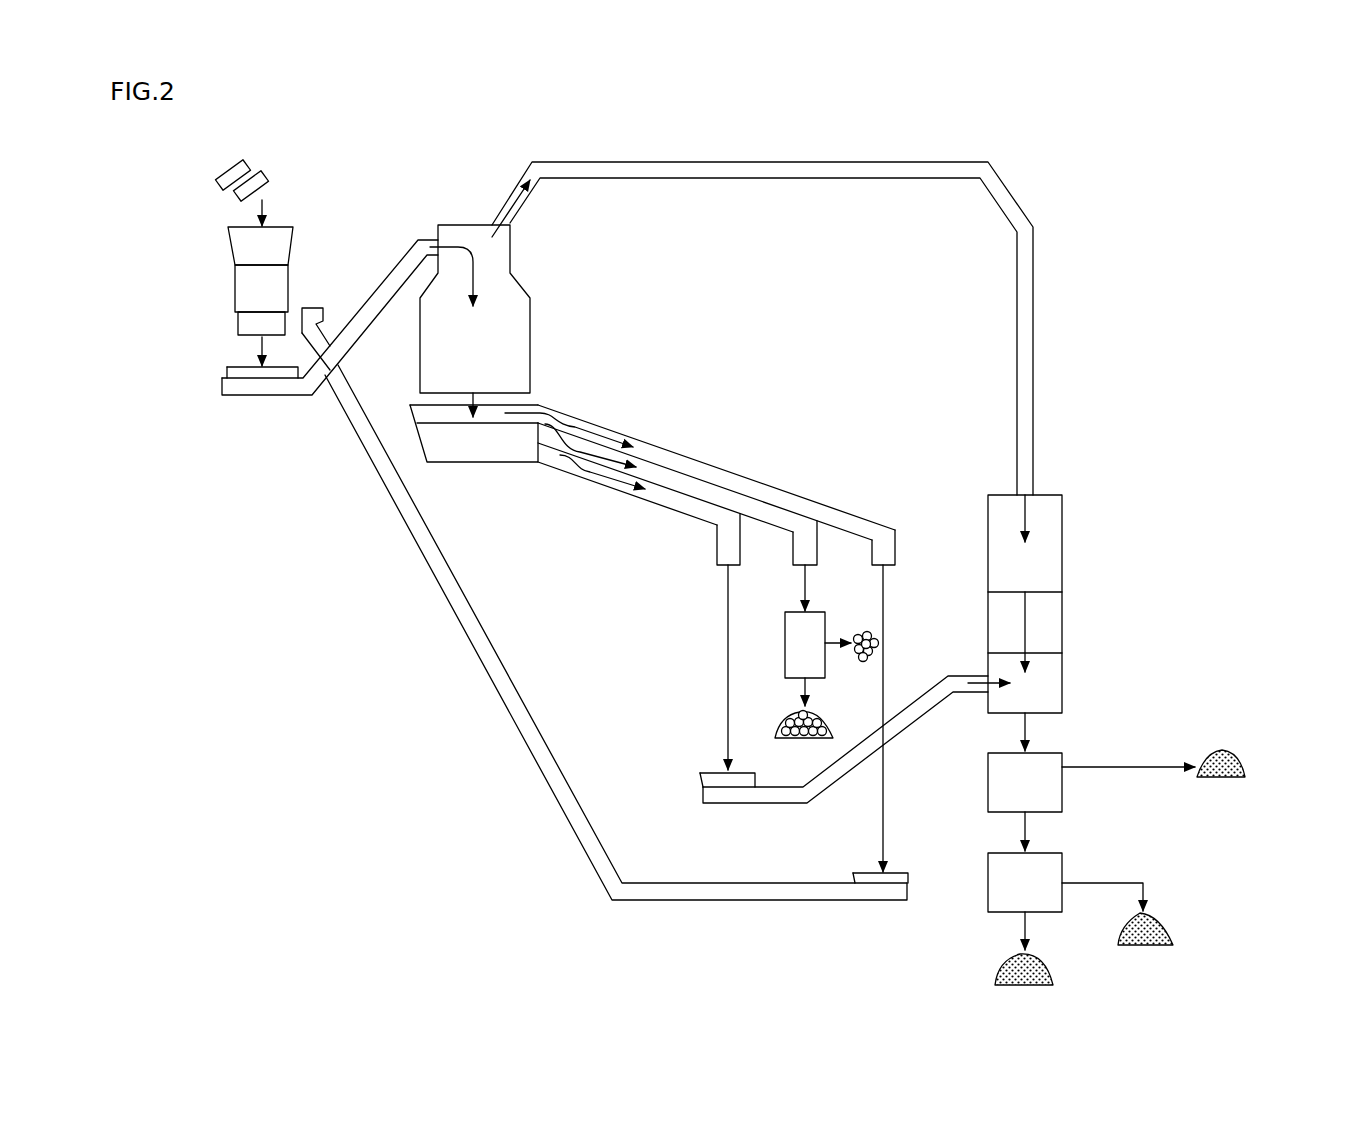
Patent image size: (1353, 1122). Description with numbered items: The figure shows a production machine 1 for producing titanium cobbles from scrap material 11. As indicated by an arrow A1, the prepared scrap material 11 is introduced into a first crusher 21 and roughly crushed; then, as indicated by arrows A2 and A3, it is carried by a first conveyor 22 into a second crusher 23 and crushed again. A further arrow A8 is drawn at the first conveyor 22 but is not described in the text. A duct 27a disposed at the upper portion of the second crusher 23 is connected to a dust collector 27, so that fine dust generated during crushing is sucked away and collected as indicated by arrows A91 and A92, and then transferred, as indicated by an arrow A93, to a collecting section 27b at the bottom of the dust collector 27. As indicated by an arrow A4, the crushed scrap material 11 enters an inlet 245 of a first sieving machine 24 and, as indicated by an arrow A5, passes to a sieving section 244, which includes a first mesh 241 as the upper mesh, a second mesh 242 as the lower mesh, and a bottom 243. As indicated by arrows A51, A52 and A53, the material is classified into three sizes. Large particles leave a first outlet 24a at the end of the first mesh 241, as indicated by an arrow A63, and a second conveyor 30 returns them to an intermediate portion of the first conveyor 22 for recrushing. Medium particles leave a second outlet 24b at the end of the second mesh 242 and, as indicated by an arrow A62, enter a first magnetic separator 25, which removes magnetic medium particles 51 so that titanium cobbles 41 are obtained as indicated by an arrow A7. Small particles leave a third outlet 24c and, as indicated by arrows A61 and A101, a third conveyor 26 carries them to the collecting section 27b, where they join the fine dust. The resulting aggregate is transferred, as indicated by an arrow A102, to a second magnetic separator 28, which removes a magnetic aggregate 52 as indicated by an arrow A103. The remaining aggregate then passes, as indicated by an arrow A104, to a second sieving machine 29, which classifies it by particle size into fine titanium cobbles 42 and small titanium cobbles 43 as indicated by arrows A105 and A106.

The production machine 1 is at (1083, 232).
The scrap material 11 is at (252, 160).
The first crusher 21 is at (248, 282).
The first conveyor 22 is at (373, 312).
The second crusher 23 is at (510, 316).
The first sieving machine 24 is at (754, 505).
The first mesh 241 is at (720, 482).
The second mesh 242 is at (667, 488).
The bottom 243 is at (695, 510).
The sieving section 244 is at (668, 455).
The inlet 245 is at (490, 420).
The first outlet 24a is at (890, 548).
The second outlet 24b is at (810, 543).
The third outlet 24c is at (720, 552).
The first magnetic separator 25 is at (785, 640).
The third conveyor 26 is at (898, 725).
The dust collector 27 is at (1064, 604).
The duct 27a is at (852, 172).
The collecting section 27b is at (1055, 680).
The second magnetic separator 28 is at (1050, 783).
The second sieving machine 29 is at (1052, 867).
The second conveyor 30 is at (695, 893).
The titanium cobbles 41 is at (830, 713).
The fine titanium cobbles 42 is at (995, 970).
The small titanium cobbles 43 is at (1175, 918).
The magnetic medium particles 51 is at (858, 633).
The magnetic aggregate 52 is at (1237, 753).
The arrow A1 is at (265, 206).
The arrow A2 is at (252, 347).
The arrow A3 is at (450, 240).
The arrow A4 is at (470, 396).
The arrow A5 is at (547, 412).
The arrow A51 is at (600, 435).
The arrow A52 is at (613, 467).
The arrow A53 is at (600, 477).
The arrow A61 is at (725, 667).
The arrow A62 is at (803, 588).
The arrow A63 is at (883, 613).
The arrow A7 is at (800, 693).
The deflector flow A8 is at (347, 320).
The arrow A91 is at (500, 207).
The arrow A92 is at (1027, 512).
The arrow A93 is at (1027, 623).
The arrow A101 is at (997, 688).
The arrow A102 is at (1027, 727).
The arrow A103 is at (1150, 767).
The arrow A104 is at (1030, 825).
The arrow A105 is at (1020, 927).
The arrow A106 is at (1147, 895).